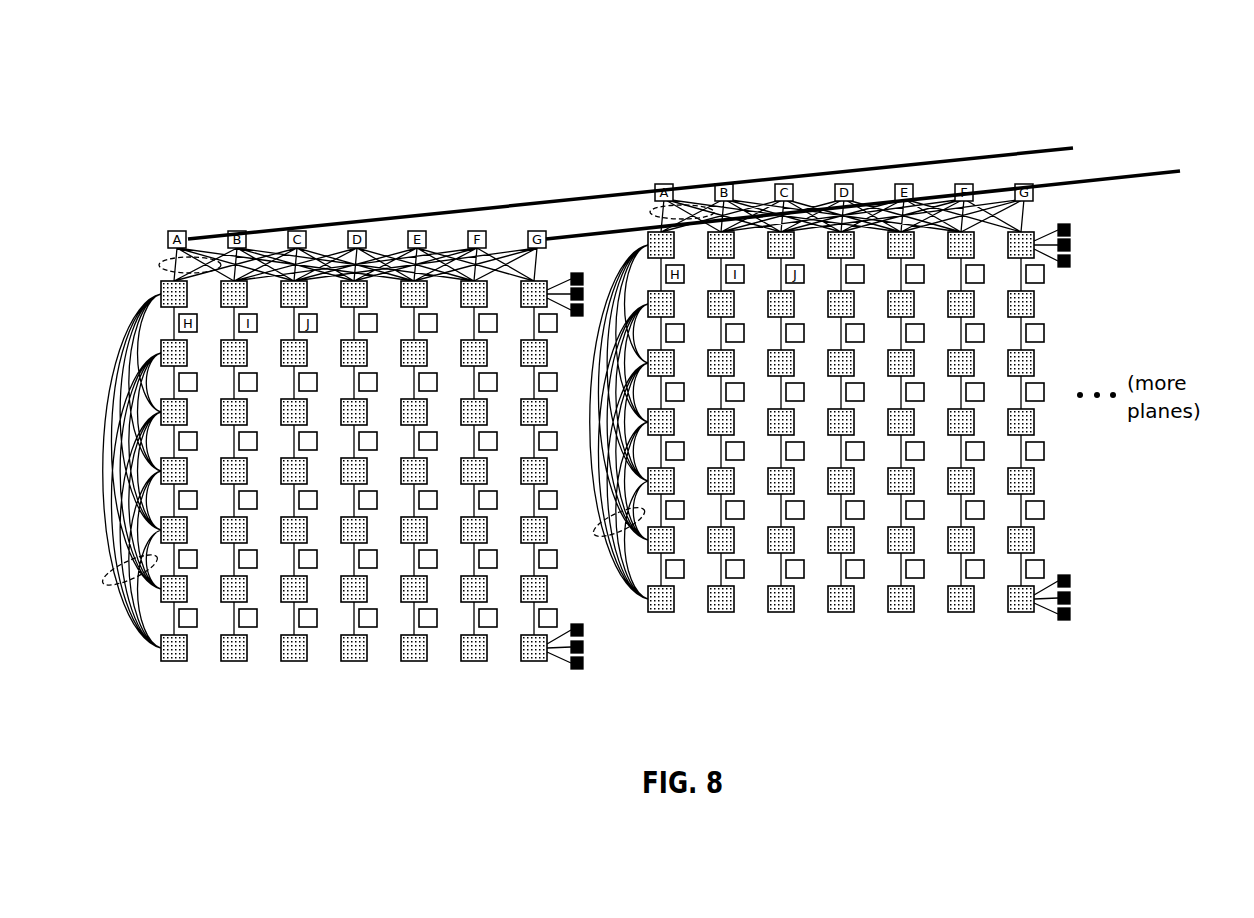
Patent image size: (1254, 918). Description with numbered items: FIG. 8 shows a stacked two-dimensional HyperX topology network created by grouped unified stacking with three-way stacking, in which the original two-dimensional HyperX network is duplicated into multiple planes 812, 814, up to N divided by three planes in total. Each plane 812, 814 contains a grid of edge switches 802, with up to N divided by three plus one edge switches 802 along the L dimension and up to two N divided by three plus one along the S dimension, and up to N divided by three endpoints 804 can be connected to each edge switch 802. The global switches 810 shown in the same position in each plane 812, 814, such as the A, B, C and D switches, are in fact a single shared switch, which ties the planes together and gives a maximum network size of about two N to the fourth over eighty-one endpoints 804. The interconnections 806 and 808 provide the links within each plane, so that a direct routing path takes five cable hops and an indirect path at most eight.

The edge switch 802 is at (530, 661).
The endpoint 804 is at (584, 310).
The input interconnect 806 is at (160, 266).
The intra-column interconnect 808 is at (105, 583).
The global switch 810 is at (294, 230).
The plane 812 is at (347, 168).
The plane 814 is at (832, 116).